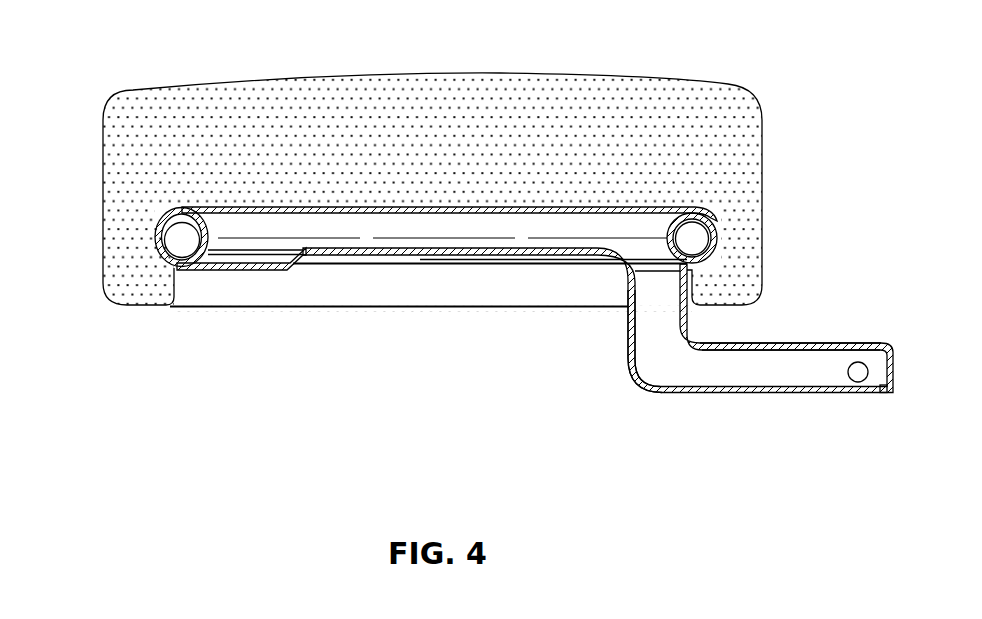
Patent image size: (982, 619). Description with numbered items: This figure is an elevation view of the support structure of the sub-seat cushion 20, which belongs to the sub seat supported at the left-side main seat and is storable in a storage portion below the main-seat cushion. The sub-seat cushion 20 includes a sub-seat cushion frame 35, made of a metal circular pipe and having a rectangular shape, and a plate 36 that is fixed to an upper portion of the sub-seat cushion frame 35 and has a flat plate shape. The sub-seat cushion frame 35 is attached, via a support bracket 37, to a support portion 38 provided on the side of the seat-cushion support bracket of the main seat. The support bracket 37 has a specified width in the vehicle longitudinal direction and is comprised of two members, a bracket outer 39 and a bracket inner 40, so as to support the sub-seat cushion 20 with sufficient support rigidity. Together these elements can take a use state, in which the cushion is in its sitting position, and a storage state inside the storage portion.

The sub-seat cushion 20 is at (603, 74).
The sub-seat cushion frame 35 is at (157, 241).
The plate 36 is at (402, 206).
The support bracket 37 is at (731, 398).
The support portion 38 is at (859, 382).
The bracket outer 39 is at (810, 343).
The bracket inner 40 is at (628, 349).